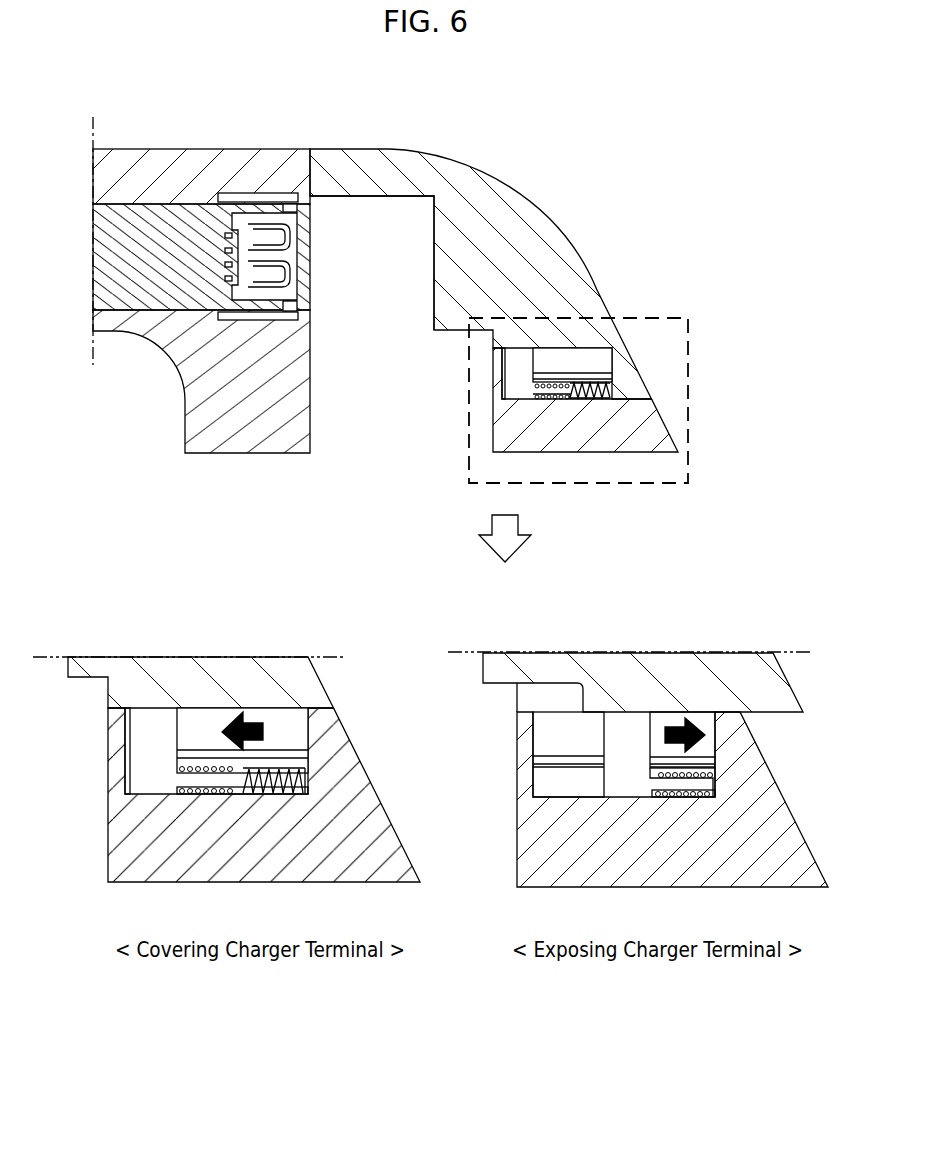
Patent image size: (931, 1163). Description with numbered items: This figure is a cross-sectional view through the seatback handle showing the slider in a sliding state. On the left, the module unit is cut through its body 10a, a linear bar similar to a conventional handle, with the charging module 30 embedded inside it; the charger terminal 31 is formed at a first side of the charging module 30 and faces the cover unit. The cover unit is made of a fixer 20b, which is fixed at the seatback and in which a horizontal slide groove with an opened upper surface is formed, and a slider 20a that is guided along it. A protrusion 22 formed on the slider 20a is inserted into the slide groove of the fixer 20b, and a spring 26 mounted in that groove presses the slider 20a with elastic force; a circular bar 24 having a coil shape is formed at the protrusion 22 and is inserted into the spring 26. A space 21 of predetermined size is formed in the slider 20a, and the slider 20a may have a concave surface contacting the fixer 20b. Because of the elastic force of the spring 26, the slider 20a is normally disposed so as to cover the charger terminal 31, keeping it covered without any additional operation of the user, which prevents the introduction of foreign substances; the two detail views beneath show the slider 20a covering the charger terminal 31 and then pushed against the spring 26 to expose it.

The body 10a is at (228, 167).
The charging module 30 is at (163, 230).
The charger terminal 31 is at (275, 275).
The slider 20a is at (480, 205).
The fixer 20b is at (637, 427).
The space 21 is at (385, 264).
The protrusion 22 is at (518, 368).
The circular bar 24 is at (566, 397).
The spring 26 is at (612, 387).